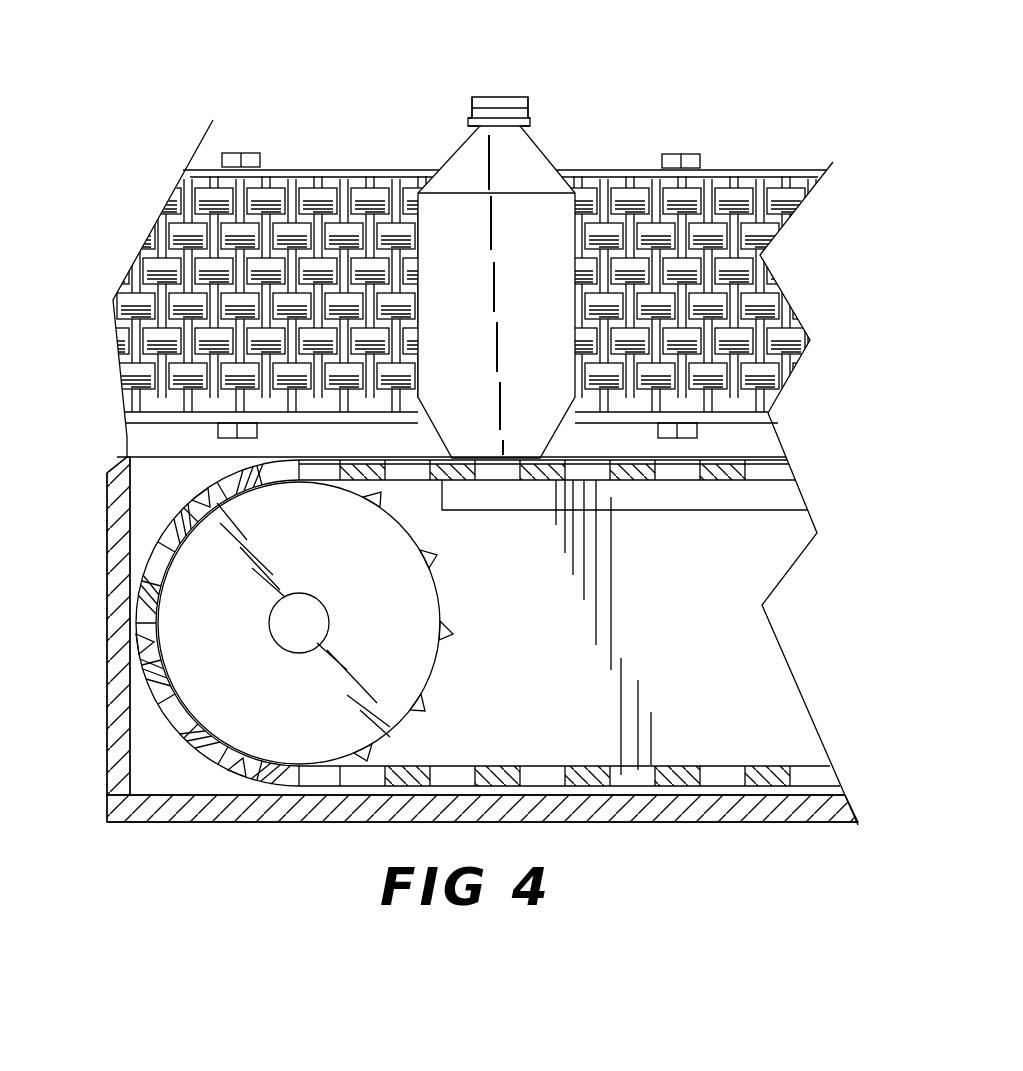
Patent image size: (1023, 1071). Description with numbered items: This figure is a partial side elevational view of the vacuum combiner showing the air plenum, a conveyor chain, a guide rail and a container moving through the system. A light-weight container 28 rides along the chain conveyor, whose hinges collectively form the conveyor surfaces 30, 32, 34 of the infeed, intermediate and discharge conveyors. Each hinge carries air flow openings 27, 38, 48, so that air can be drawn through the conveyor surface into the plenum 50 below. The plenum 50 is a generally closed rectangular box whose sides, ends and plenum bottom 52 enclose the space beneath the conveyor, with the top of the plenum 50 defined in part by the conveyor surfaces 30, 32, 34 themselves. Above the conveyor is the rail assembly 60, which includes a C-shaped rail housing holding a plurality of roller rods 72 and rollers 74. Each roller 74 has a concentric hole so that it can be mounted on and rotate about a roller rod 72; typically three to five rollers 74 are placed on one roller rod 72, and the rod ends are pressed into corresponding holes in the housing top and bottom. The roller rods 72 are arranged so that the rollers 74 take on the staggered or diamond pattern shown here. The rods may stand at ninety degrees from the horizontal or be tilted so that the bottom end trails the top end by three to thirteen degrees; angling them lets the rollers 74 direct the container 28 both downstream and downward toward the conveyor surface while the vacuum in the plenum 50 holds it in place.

The light-weight container 28 is at (452, 185).
The rail assembly 60 is at (492, 263).
The roller rod 72 is at (765, 190).
The roller 74 is at (705, 205).
The infeed conveyor surface 30 is at (711, 627).
The intermediate conveyor surface 32 is at (711, 627).
The discharge conveyor surface 34 is at (795, 503).
The plenum 50 is at (558, 649).
The air flow openings 27 is at (573, 630).
The air flow openings 38 is at (573, 630).
The air flow openings 48 is at (820, 752).
The plenum bottom 52 is at (835, 815).